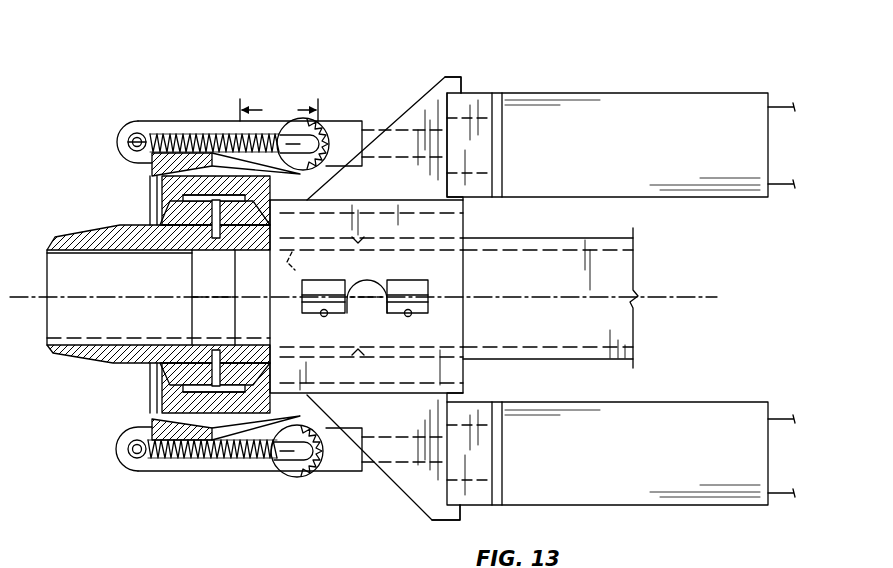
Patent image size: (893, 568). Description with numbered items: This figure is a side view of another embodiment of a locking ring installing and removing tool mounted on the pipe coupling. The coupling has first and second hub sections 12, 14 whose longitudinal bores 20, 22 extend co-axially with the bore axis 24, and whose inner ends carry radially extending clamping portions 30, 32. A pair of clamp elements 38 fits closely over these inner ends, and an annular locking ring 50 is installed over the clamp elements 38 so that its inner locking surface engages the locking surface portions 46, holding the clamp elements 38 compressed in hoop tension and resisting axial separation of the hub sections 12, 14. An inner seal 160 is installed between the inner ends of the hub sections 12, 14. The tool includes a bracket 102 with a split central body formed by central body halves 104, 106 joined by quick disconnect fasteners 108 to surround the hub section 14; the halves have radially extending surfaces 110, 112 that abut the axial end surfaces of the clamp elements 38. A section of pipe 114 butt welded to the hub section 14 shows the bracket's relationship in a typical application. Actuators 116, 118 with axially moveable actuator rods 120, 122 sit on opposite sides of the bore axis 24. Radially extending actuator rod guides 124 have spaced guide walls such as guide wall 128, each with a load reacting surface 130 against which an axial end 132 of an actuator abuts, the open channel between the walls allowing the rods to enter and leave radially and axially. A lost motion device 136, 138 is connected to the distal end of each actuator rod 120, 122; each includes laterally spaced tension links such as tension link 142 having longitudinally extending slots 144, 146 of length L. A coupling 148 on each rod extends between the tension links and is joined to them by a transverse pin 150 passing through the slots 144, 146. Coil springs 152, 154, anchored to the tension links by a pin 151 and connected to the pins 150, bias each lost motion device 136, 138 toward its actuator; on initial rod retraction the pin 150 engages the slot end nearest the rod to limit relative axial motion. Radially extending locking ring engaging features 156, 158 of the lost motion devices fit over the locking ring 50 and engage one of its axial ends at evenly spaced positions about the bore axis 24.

The first hub section 12 is at (72, 235).
The second hub section 14 is at (286, 273).
The longitudinal bore 20 is at (55, 348).
The longitudinal bore 22 is at (247, 348).
The longitudinal bore axis 24 is at (680, 298).
The clamping portion 30 is at (190, 228).
The clamping portion 32 is at (218, 247).
The clamp elements 38 is at (187, 182).
The locking surface portions 46 is at (237, 127).
The locking ring 50 is at (152, 162).
The bracket 102 is at (532, 290).
The central body half 104 is at (466, 226).
The central body half 106 is at (466, 374).
The quick disconnect fasteners 108 is at (412, 316).
The radially extending surface 110 is at (282, 248).
The radially extending surface 112 is at (326, 315).
The pipe 114 is at (555, 238).
The actuator 116 is at (621, 120).
The actuator 118 is at (675, 506).
The actuator rod 120 is at (370, 118).
The actuator rod 122 is at (368, 470).
The actuator rod guides 124 is at (452, 75).
The guide wall 128 is at (430, 88).
The load reacting surface 130 is at (366, 283).
The axial end 132 is at (455, 110).
The lost motion device 136 is at (203, 87).
The lost motion device 138 is at (239, 487).
The tension link 142 is at (200, 120).
The slot 144 is at (256, 122).
The slot 146 is at (282, 420).
The coupling 148 is at (340, 478).
The transverse pin 150 is at (322, 128).
The pin 151 is at (130, 140).
The coil spring 152 is at (148, 138).
The coil spring 154 is at (212, 463).
The locking ring engaging feature 156 is at (128, 150).
The locking ring engaging feature 158 is at (132, 437).
The inner seal 160 is at (213, 337).